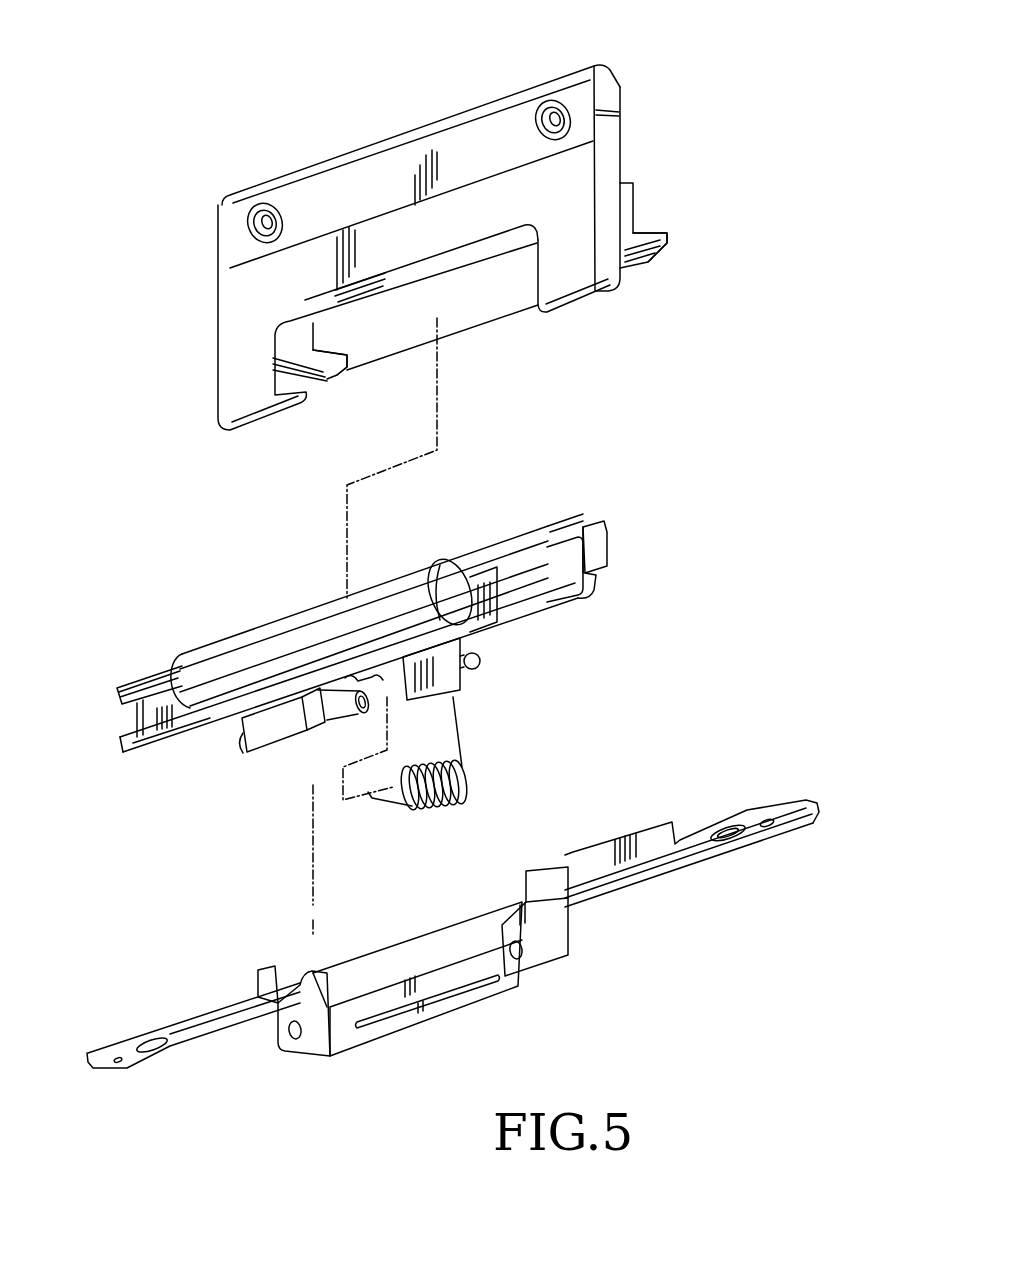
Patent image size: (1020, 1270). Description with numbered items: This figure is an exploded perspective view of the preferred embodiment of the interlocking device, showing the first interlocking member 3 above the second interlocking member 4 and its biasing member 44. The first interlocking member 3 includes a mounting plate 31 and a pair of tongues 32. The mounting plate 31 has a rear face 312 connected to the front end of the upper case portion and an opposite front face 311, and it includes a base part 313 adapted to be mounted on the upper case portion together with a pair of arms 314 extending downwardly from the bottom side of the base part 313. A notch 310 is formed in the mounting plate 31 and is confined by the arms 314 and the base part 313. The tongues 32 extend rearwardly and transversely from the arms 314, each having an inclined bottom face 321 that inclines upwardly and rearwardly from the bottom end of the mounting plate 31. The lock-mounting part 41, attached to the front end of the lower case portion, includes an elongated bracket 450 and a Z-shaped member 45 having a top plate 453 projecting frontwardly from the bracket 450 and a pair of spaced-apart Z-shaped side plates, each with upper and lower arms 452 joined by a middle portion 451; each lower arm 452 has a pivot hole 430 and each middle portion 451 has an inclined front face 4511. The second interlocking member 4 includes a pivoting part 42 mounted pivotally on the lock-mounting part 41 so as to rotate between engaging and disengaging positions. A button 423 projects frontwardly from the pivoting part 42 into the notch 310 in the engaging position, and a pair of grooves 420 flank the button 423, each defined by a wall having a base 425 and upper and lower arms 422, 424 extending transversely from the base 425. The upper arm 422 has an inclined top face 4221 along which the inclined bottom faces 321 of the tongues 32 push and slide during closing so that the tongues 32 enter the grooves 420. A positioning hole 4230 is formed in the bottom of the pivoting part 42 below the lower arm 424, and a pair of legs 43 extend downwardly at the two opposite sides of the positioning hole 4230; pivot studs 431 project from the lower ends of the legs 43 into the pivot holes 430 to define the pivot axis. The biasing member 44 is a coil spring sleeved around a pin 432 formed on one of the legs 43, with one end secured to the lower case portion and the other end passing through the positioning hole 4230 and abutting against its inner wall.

The first interlocking member 3 is at (412, 306).
The mounting plate 31 is at (217, 303).
The notch 310 is at (417, 320).
The front face 311 is at (450, 225).
The rear face 312 is at (487, 95).
The base part 313 is at (370, 178).
The arms 314 is at (237, 367).
The tongues 32 is at (323, 355).
The inclined bottom faces 321 is at (323, 383).
The second interlocking member 4 is at (440, 785).
The lock-mounting part 41 is at (453, 919).
The pivoting part 42 is at (357, 637).
The grooves 420 is at (150, 718).
The upper arm 422 is at (125, 688).
The inclined top face 4221 is at (167, 678).
The button 423 is at (303, 637).
The lower arm 424 is at (523, 605).
The base 425 is at (607, 563).
The legs 43 is at (371, 753).
The pivot hole 430 is at (526, 952).
The pivot studs 431 is at (481, 664).
The positioning hole 4230 is at (362, 677).
The pin 432 is at (347, 712).
The biasing member 44 is at (465, 781).
The Z-shaped member 45 is at (436, 957).
The elongated bracket 450 is at (765, 832).
The middle portion 451 is at (557, 925).
The inclined front face 4511 is at (300, 984).
The upper and lower arms 452 is at (558, 900).
The top plate 453 is at (456, 937).